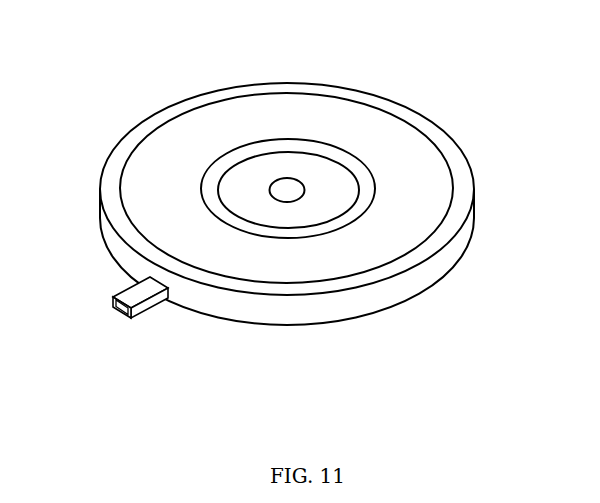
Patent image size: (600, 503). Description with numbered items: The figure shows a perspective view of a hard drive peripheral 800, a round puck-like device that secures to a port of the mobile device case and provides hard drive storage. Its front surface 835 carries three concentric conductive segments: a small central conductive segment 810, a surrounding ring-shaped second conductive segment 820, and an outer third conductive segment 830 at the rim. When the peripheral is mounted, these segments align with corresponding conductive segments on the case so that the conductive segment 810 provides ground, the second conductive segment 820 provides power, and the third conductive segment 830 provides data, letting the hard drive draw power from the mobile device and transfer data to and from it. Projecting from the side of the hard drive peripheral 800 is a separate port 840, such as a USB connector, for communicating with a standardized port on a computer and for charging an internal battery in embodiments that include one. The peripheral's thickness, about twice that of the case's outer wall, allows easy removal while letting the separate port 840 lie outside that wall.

The hard drive peripheral 800 is at (288, 187).
The conductive segment 810 is at (302, 188).
The second conductive segment 820 is at (376, 196).
The third conductive segment 830 is at (452, 238).
The front surface 835 is at (202, 130).
The separate port 840 is at (118, 317).